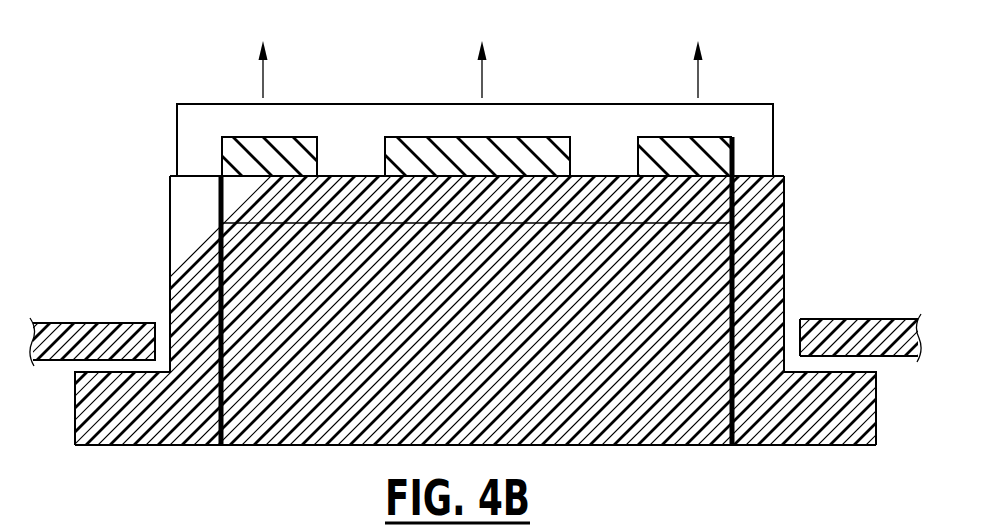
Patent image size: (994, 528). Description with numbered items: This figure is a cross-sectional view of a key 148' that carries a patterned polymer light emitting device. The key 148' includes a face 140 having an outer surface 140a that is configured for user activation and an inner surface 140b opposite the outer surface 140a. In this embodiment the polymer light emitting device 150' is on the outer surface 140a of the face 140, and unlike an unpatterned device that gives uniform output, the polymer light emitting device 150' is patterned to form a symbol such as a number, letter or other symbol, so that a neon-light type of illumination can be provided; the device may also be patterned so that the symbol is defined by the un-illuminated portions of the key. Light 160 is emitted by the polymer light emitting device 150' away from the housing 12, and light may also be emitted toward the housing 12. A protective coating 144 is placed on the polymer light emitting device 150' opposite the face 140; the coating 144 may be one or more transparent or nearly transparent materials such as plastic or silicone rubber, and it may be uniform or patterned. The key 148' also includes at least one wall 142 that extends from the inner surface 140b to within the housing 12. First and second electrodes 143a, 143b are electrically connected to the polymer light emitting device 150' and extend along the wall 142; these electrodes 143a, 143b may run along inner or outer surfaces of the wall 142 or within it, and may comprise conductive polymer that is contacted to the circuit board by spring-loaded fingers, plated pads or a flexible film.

The housing 12 is at (108, 356).
The face 140 is at (465, 214).
The outer surface 140a is at (343, 172).
The inner surface 140b is at (341, 228).
The wall 142 is at (192, 276).
The first electrode 143a is at (222, 348).
The second electrode 143b is at (711, 357).
The protective coating 144 is at (232, 120).
The key 148' is at (497, 237).
The polymer light emitting device 150' is at (479, 155).
The light 160 is at (490, 49).